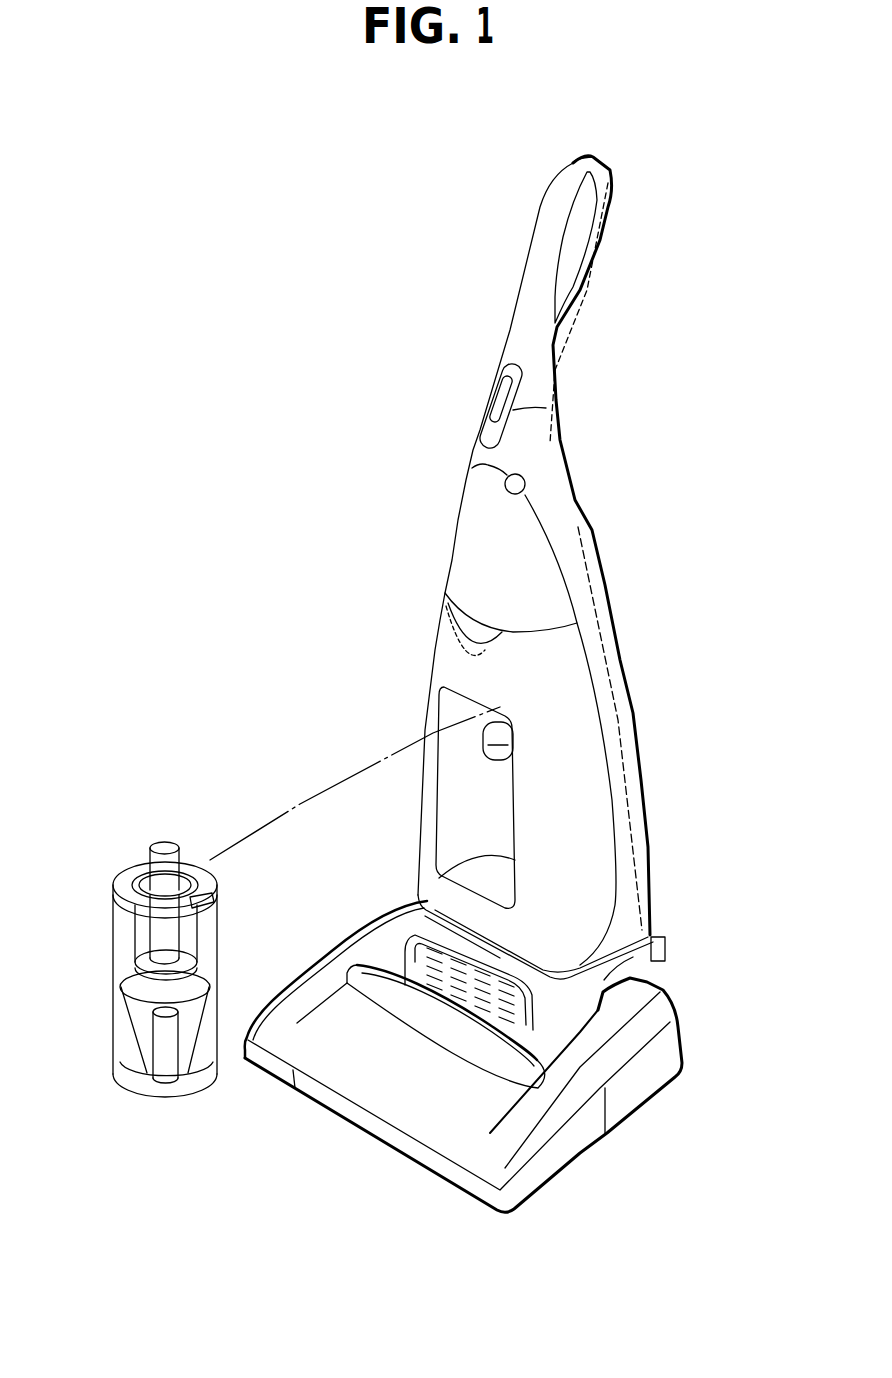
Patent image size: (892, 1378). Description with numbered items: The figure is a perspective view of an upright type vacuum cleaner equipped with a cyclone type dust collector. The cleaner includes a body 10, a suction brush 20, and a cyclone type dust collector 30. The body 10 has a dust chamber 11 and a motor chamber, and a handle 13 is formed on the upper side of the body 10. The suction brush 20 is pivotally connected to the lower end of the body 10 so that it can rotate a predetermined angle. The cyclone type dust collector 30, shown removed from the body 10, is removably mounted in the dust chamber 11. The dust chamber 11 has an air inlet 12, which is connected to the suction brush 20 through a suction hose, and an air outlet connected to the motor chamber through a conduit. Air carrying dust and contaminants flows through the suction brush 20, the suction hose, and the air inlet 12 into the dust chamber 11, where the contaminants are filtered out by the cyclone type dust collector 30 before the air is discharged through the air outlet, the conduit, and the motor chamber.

The body 10 is at (662, 852).
The dust chamber 11 is at (455, 807).
The air inlet 12 is at (490, 742).
The handle 13 is at (597, 210).
The suction brush 20 is at (380, 1152).
The cyclone type dust collector 30 is at (160, 1120).